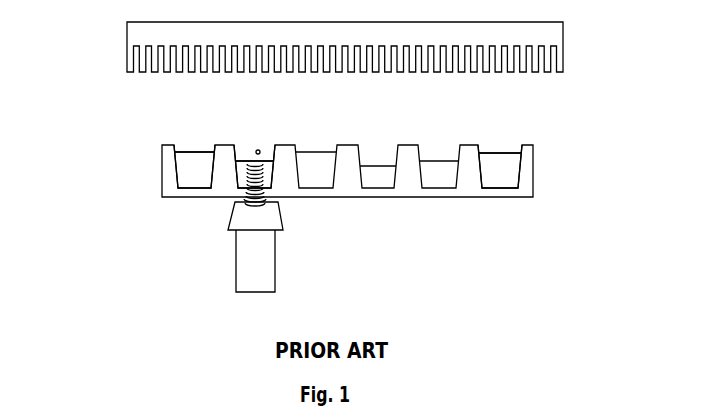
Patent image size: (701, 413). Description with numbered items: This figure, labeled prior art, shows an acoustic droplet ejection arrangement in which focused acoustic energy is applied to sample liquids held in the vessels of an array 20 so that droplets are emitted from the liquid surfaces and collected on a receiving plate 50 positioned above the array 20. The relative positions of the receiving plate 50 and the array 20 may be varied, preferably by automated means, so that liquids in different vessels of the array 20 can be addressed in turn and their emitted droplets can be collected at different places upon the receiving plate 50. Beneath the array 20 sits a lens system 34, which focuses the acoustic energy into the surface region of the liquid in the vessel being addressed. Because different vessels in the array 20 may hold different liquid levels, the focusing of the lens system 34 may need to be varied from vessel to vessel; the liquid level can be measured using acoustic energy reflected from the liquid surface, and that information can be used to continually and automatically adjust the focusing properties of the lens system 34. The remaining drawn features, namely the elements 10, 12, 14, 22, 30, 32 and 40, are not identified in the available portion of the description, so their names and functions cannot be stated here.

The pocket 10 is at (192, 158).
The pocket with spring 12 is at (258, 162).
The ball 14 is at (261, 151).
The array 20 is at (167, 172).
The nozzle tip 22 is at (273, 182).
The pick-up tool 30 is at (210, 266).
The shaft 32 is at (236, 292).
The lens system 34 is at (231, 231).
The spring 40 is at (255, 166).
The receiving plate 50 is at (133, 36).